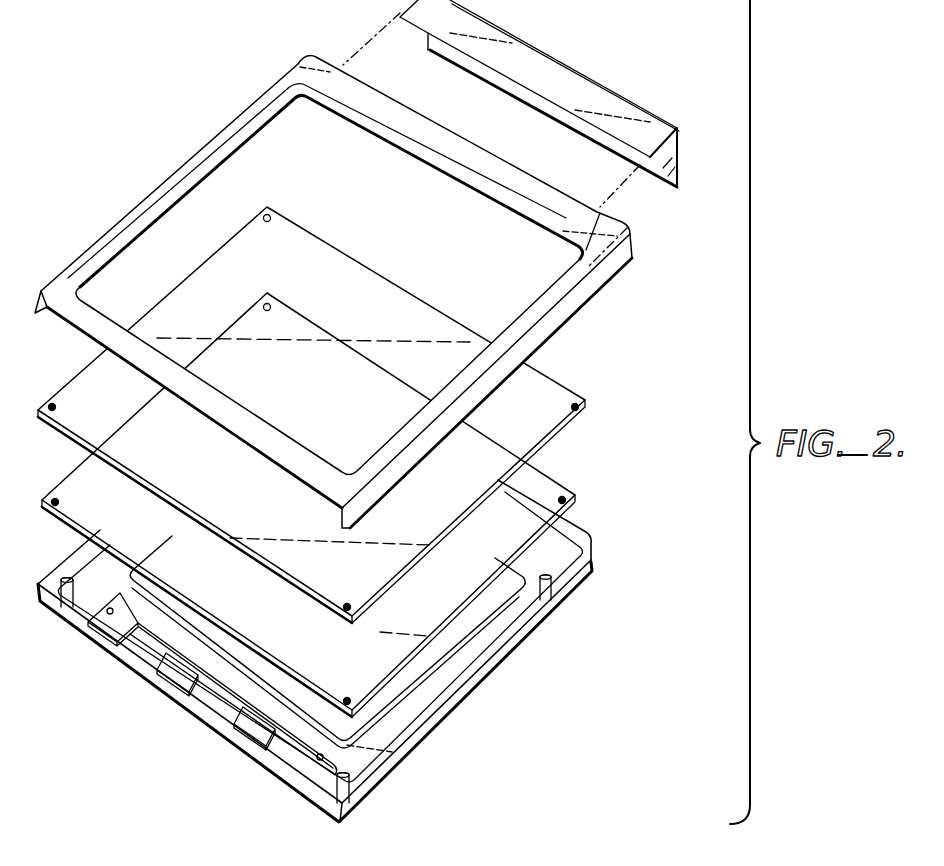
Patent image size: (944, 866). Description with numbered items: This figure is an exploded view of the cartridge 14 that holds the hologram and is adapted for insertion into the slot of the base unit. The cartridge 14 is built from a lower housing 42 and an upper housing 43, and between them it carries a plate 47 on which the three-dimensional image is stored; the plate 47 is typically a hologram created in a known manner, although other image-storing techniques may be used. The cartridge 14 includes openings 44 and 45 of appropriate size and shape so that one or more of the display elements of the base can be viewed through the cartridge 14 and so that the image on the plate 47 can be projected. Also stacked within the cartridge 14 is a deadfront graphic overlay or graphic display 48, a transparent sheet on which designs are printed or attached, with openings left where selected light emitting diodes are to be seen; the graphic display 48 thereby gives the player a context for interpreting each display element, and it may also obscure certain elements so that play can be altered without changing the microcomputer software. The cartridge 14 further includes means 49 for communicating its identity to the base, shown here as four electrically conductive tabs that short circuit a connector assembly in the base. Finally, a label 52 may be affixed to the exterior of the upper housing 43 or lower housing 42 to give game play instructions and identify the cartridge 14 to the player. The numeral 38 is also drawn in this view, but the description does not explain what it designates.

The cartridge 14 is at (522, 734).
The film sheet 38 is at (513, 865).
The lower housing 42 is at (588, 562).
The upper housing 43 is at (628, 246).
The opening 44 is at (440, 653).
The opening 45 is at (557, 263).
The plate 47 is at (553, 400).
The graphic display 48 is at (540, 500).
The means for communicating cartridge identity 49 is at (312, 765).
The label 52 is at (657, 133).